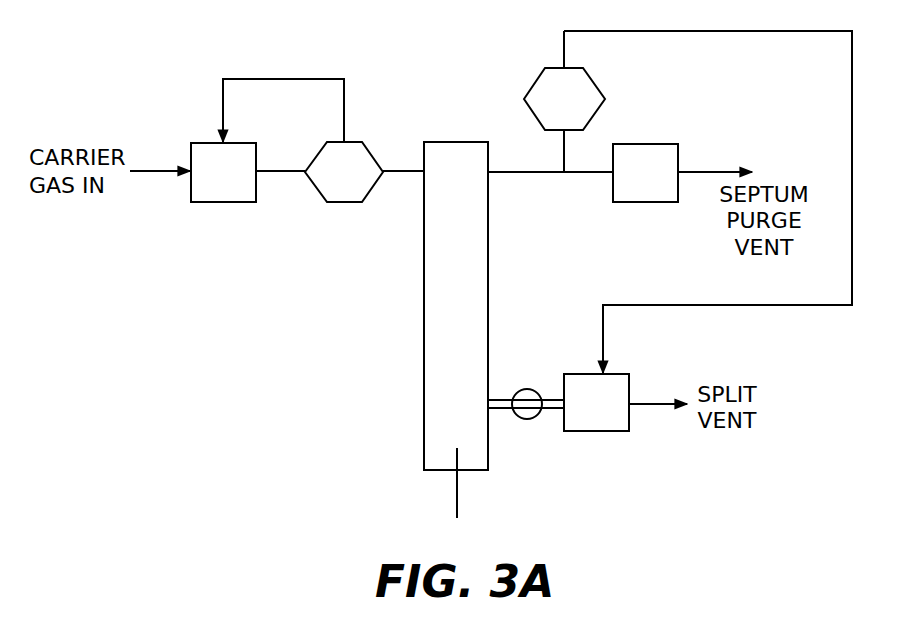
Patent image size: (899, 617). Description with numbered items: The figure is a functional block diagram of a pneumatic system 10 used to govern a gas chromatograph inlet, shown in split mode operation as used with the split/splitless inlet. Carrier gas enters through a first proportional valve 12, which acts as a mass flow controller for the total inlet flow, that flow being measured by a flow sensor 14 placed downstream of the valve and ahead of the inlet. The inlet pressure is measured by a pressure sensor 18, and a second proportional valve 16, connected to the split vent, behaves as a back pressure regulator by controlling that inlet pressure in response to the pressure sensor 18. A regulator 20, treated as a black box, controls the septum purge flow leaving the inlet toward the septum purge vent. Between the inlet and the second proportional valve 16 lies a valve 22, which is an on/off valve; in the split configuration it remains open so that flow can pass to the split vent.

The pneumatic system 10 is at (444, 348).
The first proportional valve 12 is at (223, 172).
The flow sensor 14 is at (344, 172).
The second proportional valve 16 is at (596, 402).
The pressure sensor 18 is at (564, 101).
The regulator 20 is at (645, 173).
The valve 22 is at (527, 419).